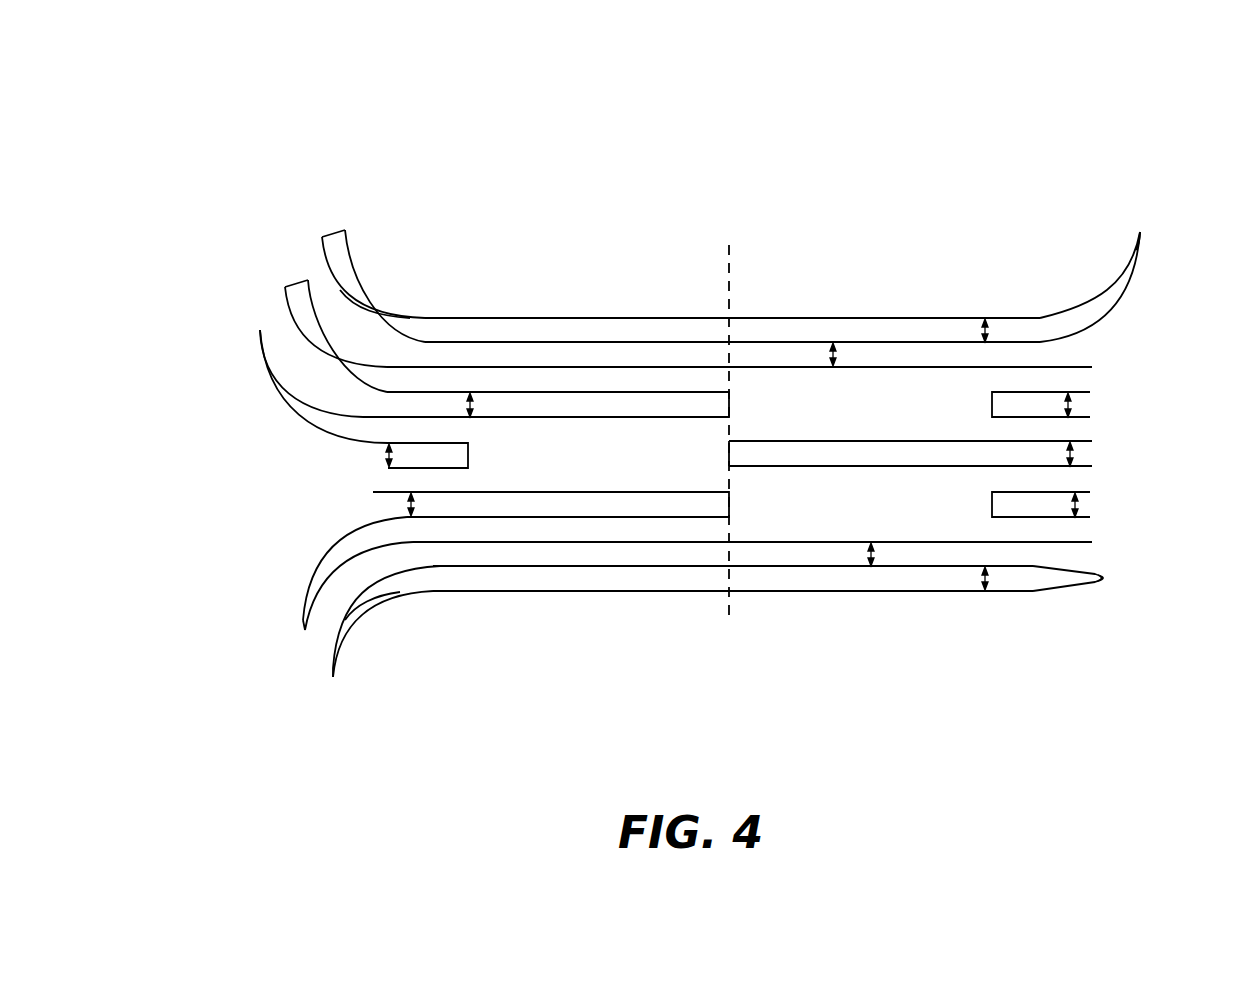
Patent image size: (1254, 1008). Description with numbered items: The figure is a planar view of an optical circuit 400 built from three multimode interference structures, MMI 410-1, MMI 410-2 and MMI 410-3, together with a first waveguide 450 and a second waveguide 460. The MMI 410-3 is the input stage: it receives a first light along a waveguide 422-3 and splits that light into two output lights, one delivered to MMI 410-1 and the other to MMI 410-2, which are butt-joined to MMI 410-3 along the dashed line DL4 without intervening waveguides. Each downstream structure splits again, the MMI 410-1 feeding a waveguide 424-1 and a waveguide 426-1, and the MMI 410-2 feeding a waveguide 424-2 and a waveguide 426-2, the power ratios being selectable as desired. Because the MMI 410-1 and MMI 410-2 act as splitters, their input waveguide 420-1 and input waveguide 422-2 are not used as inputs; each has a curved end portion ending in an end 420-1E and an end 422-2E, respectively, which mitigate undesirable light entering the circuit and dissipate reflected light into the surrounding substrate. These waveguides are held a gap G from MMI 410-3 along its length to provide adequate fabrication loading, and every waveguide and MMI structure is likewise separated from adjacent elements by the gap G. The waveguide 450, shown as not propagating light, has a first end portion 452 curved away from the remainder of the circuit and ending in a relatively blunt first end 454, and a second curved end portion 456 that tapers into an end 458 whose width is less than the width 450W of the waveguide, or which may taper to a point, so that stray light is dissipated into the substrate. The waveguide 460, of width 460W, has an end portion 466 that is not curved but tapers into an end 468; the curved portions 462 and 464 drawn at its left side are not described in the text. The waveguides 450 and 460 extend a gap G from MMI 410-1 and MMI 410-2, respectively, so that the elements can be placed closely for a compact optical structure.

The optical circuit 400 is at (282, 105).
The MMI 410-1 is at (889, 418).
The MMI 410-2 is at (889, 518).
The MMI 410-3 is at (620, 466).
The input waveguide 420-1 is at (585, 375).
The end 420-1E is at (300, 285).
The input waveguide 422-2 is at (585, 530).
The end 422-2E is at (303, 622).
The waveguide 422-3 is at (373, 497).
The waveguide 424-1 is at (1080, 368).
The waveguide 424-2 is at (1075, 480).
The waveguide 426-1 is at (1075, 430).
The waveguide 426-2 is at (1073, 528).
The first waveguide 450 is at (1012, 327).
The width 450W is at (985, 318).
The first end portion 452 is at (377, 253).
The first end 454 is at (333, 233).
The second curved end portion 456 is at (1107, 265).
The end 458 is at (1140, 232).
The second waveguide 460 is at (808, 580).
The width 460W is at (985, 590).
The lower ground bend 462 is at (377, 638).
The lower ground conductor end 464 is at (332, 672).
The end portion 466 is at (1050, 602).
The end 468 is at (1105, 578).
The gap G is at (470, 393).
The dashed line DL4 is at (728, 278).